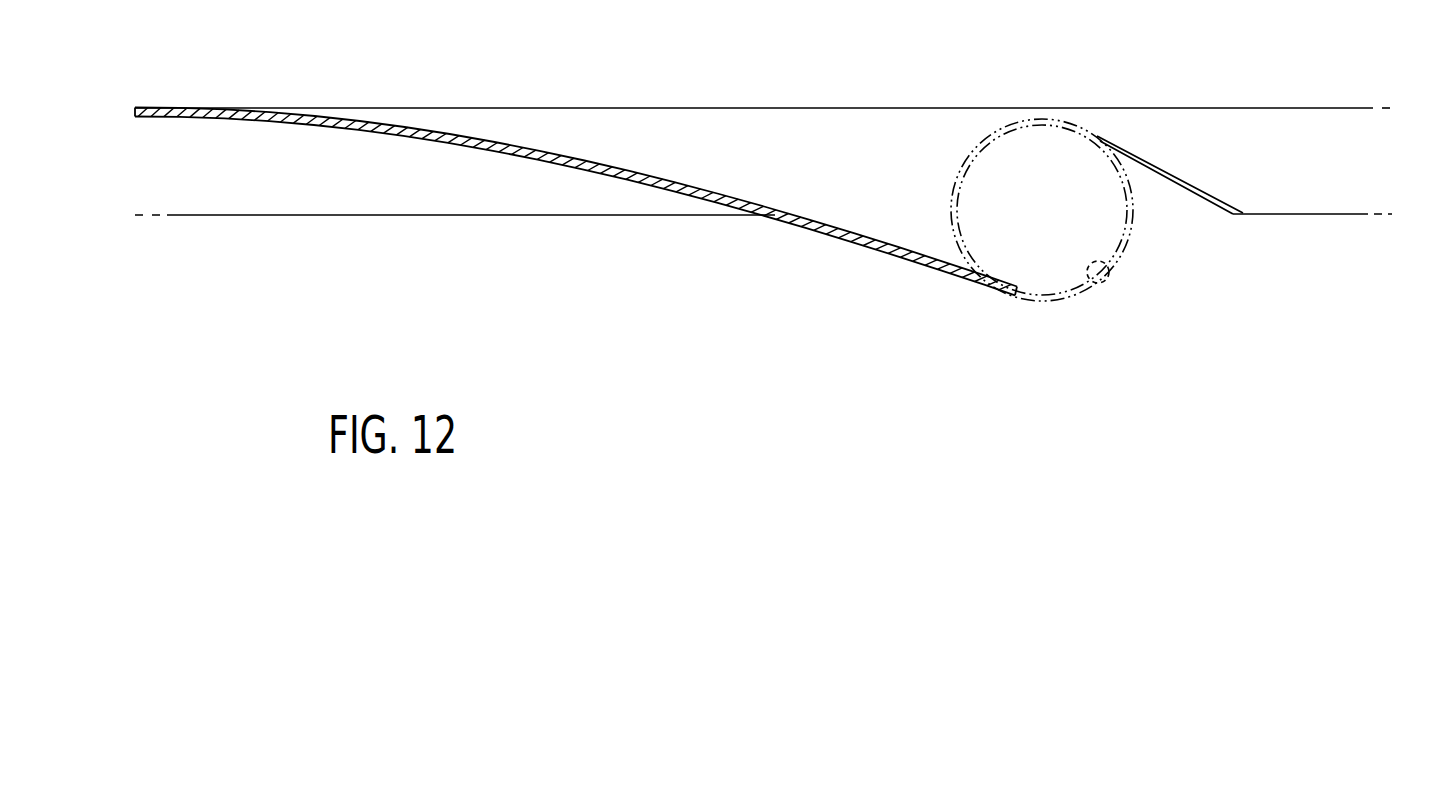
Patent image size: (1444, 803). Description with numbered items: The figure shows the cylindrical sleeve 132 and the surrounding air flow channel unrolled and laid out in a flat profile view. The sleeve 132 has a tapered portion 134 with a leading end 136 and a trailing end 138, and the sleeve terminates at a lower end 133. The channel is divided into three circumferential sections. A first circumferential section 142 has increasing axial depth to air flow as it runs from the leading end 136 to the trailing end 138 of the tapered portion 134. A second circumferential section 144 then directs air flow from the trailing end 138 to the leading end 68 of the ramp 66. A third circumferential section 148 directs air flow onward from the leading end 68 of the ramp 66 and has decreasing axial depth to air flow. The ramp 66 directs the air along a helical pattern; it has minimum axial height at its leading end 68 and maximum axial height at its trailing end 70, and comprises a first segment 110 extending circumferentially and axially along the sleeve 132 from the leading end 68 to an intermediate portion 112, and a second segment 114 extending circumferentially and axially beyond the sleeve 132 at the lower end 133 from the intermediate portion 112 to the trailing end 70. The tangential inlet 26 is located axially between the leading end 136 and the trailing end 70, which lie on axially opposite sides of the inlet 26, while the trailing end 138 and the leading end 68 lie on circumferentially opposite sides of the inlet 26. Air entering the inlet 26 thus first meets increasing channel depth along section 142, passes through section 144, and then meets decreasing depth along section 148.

The tangential inlet 26 is at (1110, 272).
The ramp 66 is at (658, 175).
The leading end 68 is at (313, 118).
The trailing end 70 is at (987, 287).
The first segment 110 is at (576, 160).
The intermediate portion 112 is at (765, 202).
The second segment 114 is at (860, 242).
The sleeve 132 is at (186, 147).
The lower end 133 is at (218, 216).
The tapered portion 134 is at (1173, 168).
The leading end 136 is at (1107, 138).
The trailing end 138 is at (1238, 207).
The first circumferential section 142 is at (1203, 128).
The second circumferential section 144 is at (150, 160).
The third circumferential section 148 is at (548, 132).